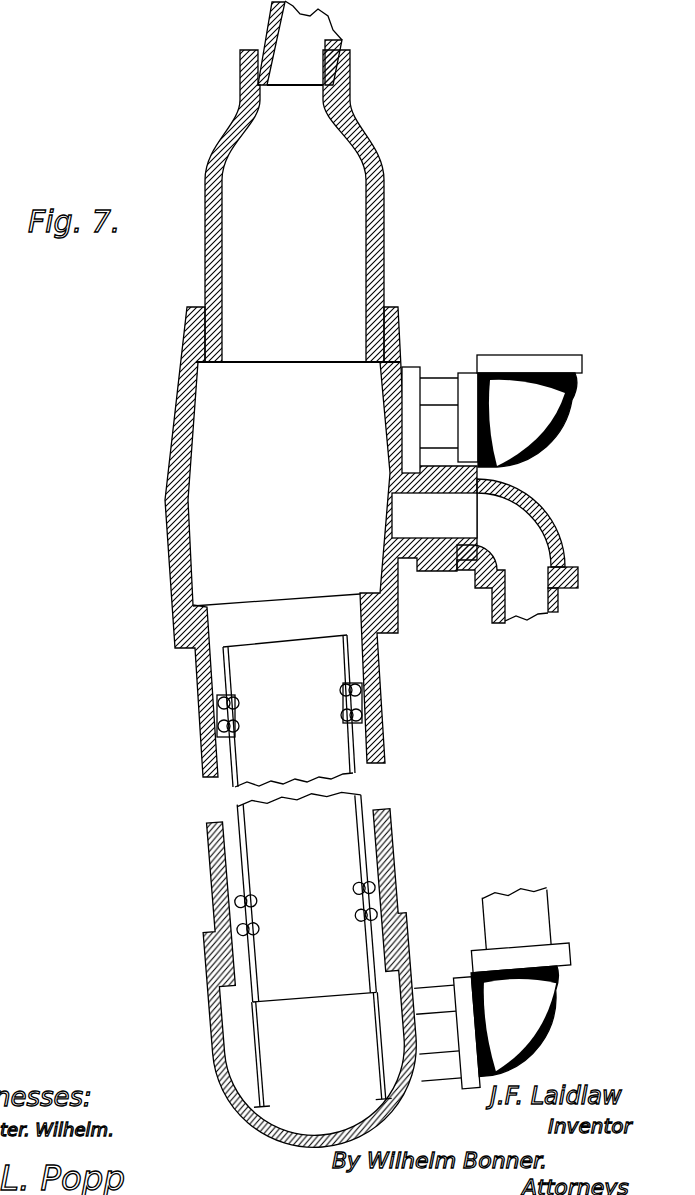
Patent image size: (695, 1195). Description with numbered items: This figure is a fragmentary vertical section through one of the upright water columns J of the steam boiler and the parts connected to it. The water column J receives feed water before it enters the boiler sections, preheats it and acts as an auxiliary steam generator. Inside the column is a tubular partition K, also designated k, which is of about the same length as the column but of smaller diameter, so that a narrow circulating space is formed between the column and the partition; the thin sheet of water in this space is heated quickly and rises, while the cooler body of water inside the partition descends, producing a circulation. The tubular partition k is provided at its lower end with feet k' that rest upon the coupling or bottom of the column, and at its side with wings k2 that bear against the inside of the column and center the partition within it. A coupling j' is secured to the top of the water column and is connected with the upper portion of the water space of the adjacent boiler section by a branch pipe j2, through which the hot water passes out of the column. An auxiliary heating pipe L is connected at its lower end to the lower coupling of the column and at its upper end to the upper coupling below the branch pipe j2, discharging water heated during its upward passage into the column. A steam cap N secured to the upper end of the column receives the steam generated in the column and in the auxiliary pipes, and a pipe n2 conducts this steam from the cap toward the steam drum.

The pipe n2 is at (300, 43).
The steam cap N is at (300, 221).
The coupling j' is at (157, 542).
The water column J is at (320, 542).
The branch pipe j2 is at (492, 414).
The auxiliary heating pipe L is at (540, 647).
The tubular partition K is at (340, 660).
The wings k2 is at (398, 701).
The tubular partition k is at (305, 895).
The feet k' is at (319, 1050).